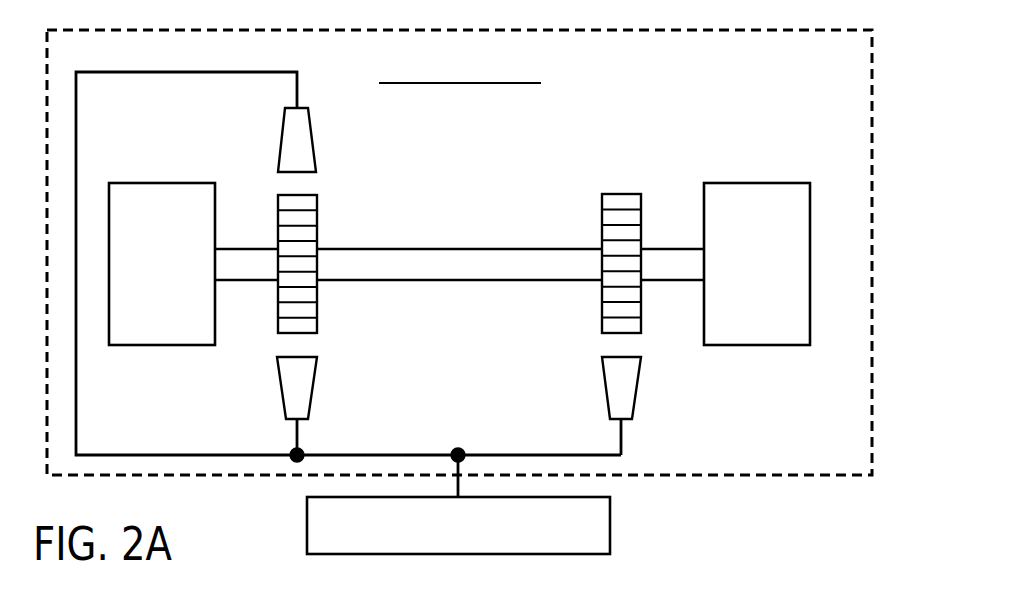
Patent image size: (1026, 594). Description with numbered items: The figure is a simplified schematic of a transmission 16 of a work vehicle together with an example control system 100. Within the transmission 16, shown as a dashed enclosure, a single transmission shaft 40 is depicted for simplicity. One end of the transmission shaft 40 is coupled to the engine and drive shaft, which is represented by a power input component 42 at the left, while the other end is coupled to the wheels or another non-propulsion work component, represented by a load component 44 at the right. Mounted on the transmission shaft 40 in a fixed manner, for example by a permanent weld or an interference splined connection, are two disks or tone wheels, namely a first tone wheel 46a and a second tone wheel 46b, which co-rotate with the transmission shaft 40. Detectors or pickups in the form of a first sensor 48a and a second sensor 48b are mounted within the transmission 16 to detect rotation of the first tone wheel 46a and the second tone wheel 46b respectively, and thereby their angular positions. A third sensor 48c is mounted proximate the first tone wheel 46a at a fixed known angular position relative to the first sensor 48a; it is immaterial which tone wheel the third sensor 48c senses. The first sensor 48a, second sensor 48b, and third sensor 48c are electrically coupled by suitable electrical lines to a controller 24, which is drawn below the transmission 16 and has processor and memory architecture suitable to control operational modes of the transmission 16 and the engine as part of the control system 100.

The transmission 16 is at (872, 252).
The controller 24 is at (307, 523).
The transmission shaft 40 is at (413, 260).
The power input component 42 is at (162, 183).
The load component 44 is at (757, 183).
The first tone wheel 46a is at (317, 218).
The second tone wheel 46b is at (622, 194).
The first sensor 48a is at (313, 388).
The second sensor 48b is at (638, 393).
The third sensor 48c is at (312, 140).
The control system 100 is at (640, 488).